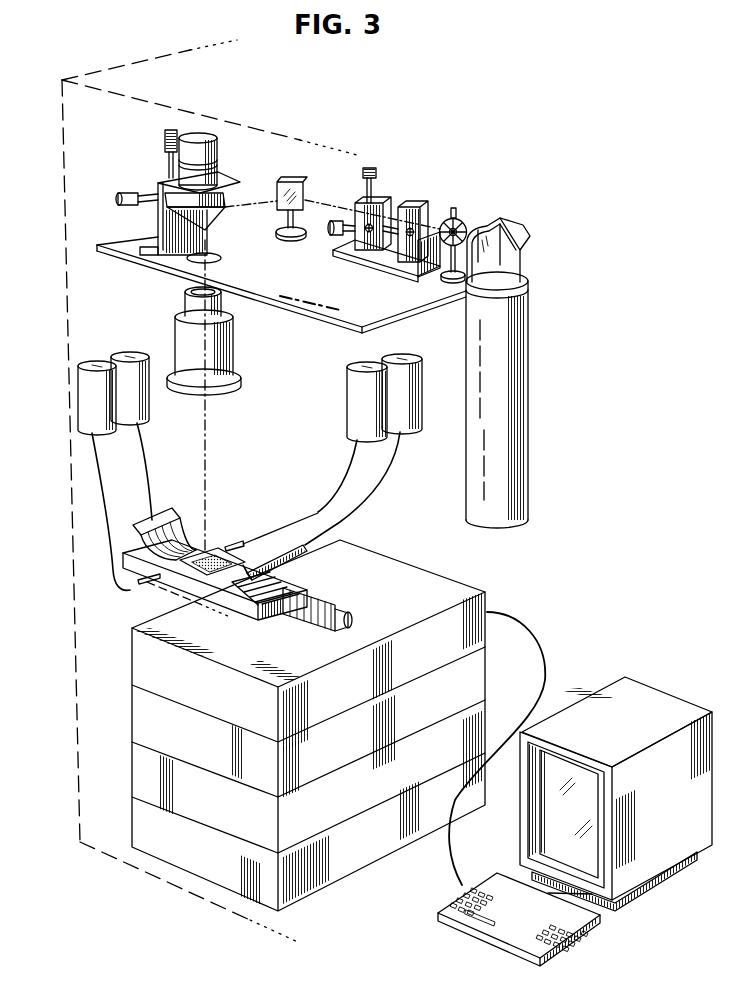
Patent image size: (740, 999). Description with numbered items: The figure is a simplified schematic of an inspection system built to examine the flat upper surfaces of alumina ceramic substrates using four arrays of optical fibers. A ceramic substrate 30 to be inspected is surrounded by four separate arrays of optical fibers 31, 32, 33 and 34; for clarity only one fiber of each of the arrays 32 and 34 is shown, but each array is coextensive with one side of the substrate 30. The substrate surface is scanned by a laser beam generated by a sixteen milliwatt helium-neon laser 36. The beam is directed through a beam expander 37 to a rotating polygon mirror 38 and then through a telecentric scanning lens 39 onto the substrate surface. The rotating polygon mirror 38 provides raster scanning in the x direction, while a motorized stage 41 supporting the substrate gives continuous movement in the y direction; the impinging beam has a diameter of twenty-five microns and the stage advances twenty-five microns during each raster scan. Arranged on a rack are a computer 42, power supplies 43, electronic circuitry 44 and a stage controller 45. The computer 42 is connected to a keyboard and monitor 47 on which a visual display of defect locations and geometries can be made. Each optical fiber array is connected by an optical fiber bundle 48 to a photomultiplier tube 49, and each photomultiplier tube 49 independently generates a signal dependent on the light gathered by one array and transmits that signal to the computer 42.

The ceramic substrate 30 is at (213, 550).
The array of optical fibers 31 is at (178, 530).
The array of optical fibers 32 is at (238, 538).
The array of optical fibers 33 is at (230, 605).
The array of optical fibers 34 is at (143, 586).
The helium-neon laser 36 is at (518, 386).
The beam expander 37 is at (390, 200).
The rotating polygon mirror 38 is at (200, 134).
The telecentric scanning lens 39 is at (237, 345).
The motorized stage 41 is at (355, 612).
The computer 42 is at (434, 595).
The power supplies 43 is at (155, 712).
The electronic circuitry 44 is at (155, 773).
The stage controller 45 is at (353, 850).
The keyboard and monitor 47 is at (625, 686).
The optical fiber bundle 48 is at (140, 452).
The photomultiplier tube 49 is at (125, 362).